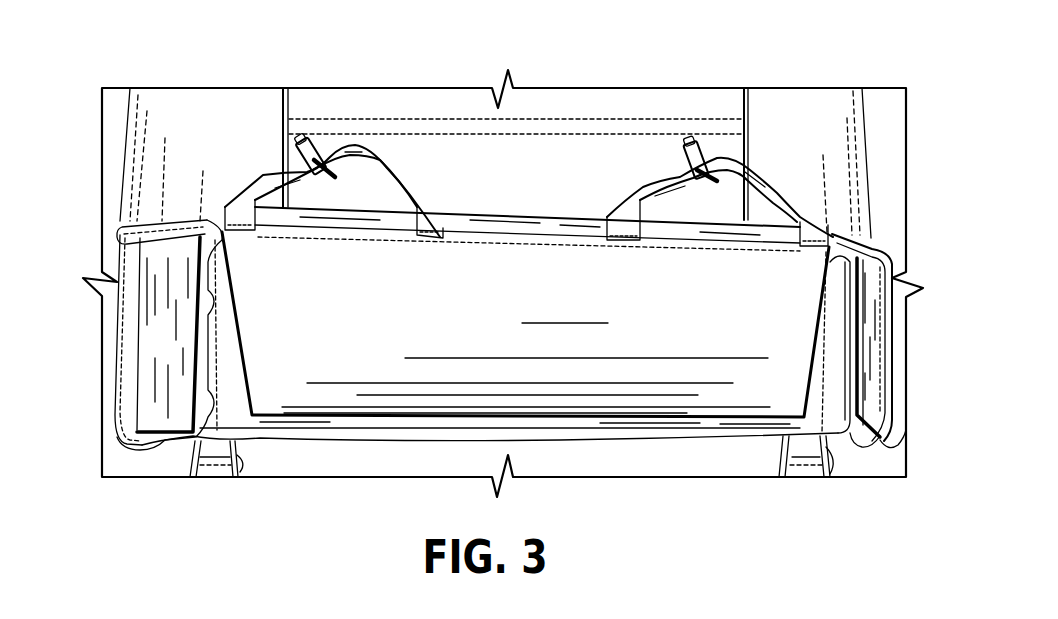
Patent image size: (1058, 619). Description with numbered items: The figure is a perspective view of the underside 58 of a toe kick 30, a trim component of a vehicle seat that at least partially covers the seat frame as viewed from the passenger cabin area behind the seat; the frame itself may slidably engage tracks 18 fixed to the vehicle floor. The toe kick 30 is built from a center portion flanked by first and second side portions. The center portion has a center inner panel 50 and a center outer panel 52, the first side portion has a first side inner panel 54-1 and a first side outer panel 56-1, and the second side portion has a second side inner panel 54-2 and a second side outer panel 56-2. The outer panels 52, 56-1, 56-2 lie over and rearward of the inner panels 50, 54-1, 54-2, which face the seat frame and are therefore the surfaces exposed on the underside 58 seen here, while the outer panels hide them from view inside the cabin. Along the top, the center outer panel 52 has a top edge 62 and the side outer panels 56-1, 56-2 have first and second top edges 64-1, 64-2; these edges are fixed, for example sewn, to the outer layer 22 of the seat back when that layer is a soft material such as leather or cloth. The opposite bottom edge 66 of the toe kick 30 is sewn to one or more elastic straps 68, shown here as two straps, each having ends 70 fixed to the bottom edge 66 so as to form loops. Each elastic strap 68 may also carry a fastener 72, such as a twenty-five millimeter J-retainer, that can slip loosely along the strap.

The tracks 18 is at (238, 463).
The outer layer 22 is at (606, 104).
The toe kick 30 is at (884, 256).
The center inner panel 50 is at (750, 398).
The center outer panel 52 is at (660, 428).
The first side inner panel 54-1 is at (150, 340).
The second side inner panel 54-2 is at (866, 367).
The first side outer panel 56-1 is at (134, 441).
The second side outer panel 56-2 is at (886, 448).
The underside 58 is at (522, 255).
The top edge 62 is at (370, 441).
The first top edge 64-1 is at (166, 442).
The second top edge 64-2 is at (855, 442).
The bottom edge 66 is at (450, 208).
The elastic strap 68 is at (249, 188).
The ends 70 is at (241, 230).
The fastener 72 is at (303, 140).